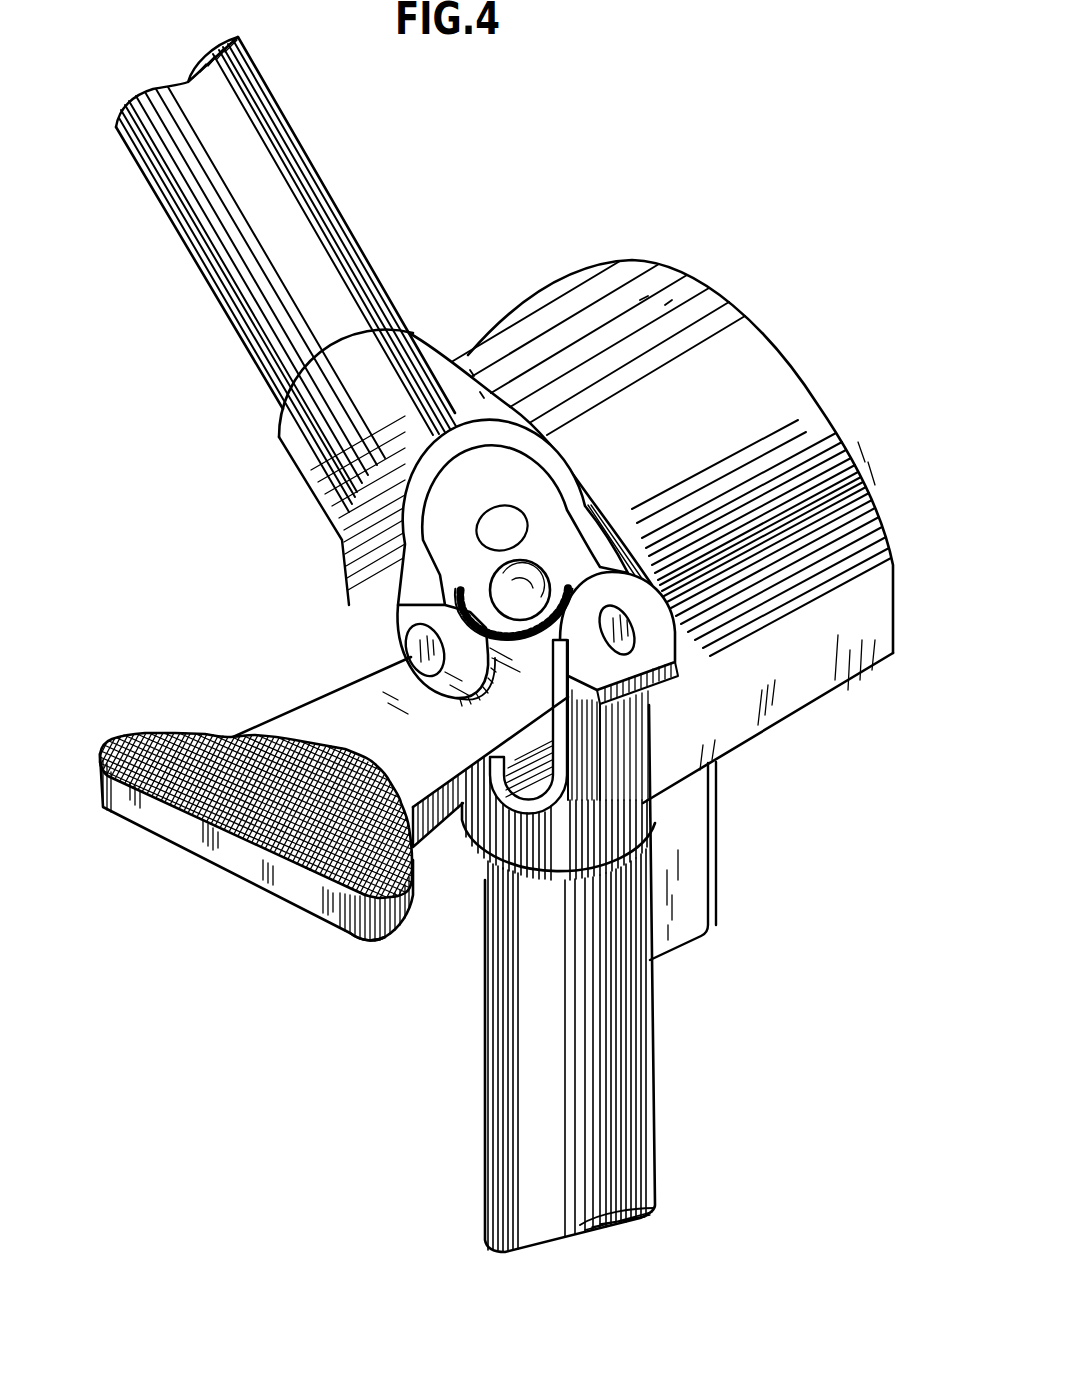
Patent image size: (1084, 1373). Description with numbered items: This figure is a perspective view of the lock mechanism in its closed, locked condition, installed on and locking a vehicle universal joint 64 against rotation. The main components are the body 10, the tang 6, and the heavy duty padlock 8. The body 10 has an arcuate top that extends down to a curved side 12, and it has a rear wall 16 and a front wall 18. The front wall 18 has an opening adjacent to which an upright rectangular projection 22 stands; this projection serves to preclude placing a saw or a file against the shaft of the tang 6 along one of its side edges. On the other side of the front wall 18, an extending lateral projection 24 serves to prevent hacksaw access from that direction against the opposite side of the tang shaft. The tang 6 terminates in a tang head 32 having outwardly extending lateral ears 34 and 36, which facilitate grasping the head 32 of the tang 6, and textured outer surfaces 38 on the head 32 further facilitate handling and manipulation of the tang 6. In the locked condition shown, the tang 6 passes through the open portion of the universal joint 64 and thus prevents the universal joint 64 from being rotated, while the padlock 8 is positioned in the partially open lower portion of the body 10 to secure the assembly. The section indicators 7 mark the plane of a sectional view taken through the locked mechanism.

The tang 6 is at (245, 685).
The section line 7- 7 is at (246, 455).
The heavy duty padlock 8 is at (367, 651).
The body 10 is at (681, 424).
The curved side 12 is at (803, 700).
The rear wall 16 is at (878, 503).
The front wall 18 is at (347, 596).
The upright rectangular projection 22 is at (427, 500).
The lateral projection 24 is at (672, 748).
The tang head 32 is at (238, 847).
The lateral ear 34 is at (112, 745).
The lateral ear 36 is at (383, 940).
The textured outer surfaces 38 is at (400, 747).
The universal joint 64 is at (242, 338).